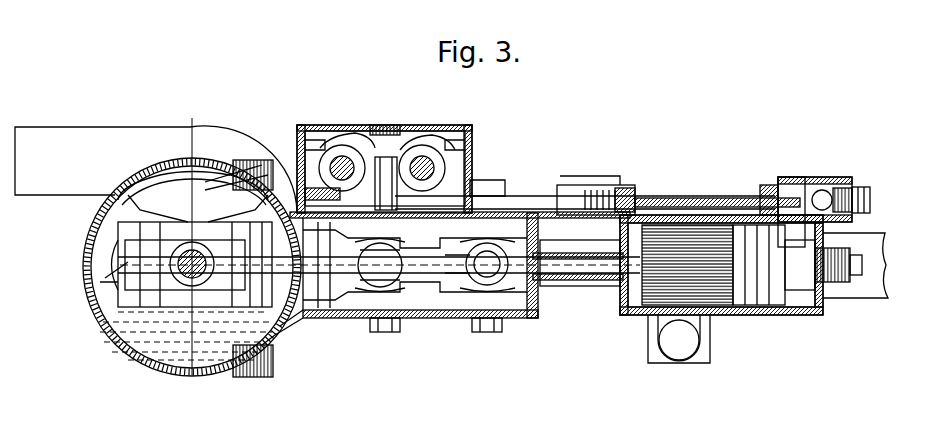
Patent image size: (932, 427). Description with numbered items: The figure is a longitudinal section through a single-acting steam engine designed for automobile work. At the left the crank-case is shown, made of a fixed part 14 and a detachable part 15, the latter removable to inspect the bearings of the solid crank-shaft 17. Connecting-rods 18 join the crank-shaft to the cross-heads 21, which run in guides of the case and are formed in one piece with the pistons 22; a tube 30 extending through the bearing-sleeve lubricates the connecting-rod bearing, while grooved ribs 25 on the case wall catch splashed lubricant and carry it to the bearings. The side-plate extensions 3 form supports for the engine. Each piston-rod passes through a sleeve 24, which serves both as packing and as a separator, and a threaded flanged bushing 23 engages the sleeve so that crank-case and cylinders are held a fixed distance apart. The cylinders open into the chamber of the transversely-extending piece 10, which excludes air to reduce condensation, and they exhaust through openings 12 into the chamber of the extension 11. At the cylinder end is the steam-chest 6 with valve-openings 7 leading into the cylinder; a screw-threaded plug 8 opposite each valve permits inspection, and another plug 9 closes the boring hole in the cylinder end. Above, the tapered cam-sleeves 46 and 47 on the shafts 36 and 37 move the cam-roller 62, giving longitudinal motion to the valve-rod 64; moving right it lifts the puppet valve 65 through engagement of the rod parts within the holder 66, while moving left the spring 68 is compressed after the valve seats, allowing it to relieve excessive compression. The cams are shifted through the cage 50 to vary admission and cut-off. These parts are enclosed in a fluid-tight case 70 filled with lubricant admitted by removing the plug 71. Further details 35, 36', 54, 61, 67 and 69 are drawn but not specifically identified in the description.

The extension 3 is at (156, 169).
The steam-chest 6 is at (808, 178).
The valve-opening 7 is at (790, 180).
The screw-threaded plug 8 is at (870, 200).
The screw-threaded plug 9 is at (850, 264).
The transversely-extending piece 10 is at (630, 306).
The extension 11 is at (711, 345).
The opening 12 is at (688, 314).
The case 14 is at (288, 318).
The crank-case 15 is at (145, 356).
The crank-shaft 17 is at (178, 262).
The connecting-rod 18 is at (420, 278).
The cross-head 21 is at (367, 300).
The piston 22 is at (775, 310).
The flanged bushing 23 is at (548, 282).
The sleeve 24 is at (572, 262).
The rib 25 is at (145, 176).
The tube 30 is at (104, 282).
The strap 35 is at (250, 165).
The shaft 36 is at (266, 158).
The post 36' is at (264, 384).
The shaft 37 is at (426, 160).
The cam-sleeve 46 is at (333, 160).
The cam-sleeve 47 is at (452, 160).
The cage 50 is at (340, 136).
The gear 54 is at (322, 222).
The bolt 61 is at (388, 330).
The cam-roller 62 is at (368, 152).
The valve-rod 64 is at (530, 192).
The valve 65 is at (832, 188).
The holder 66 is at (590, 188).
The spring 67 is at (600, 188).
The spring 68 is at (622, 190).
The rod 69 is at (730, 196).
The case 70 is at (470, 128).
The screw-threaded plug 71 is at (388, 126).